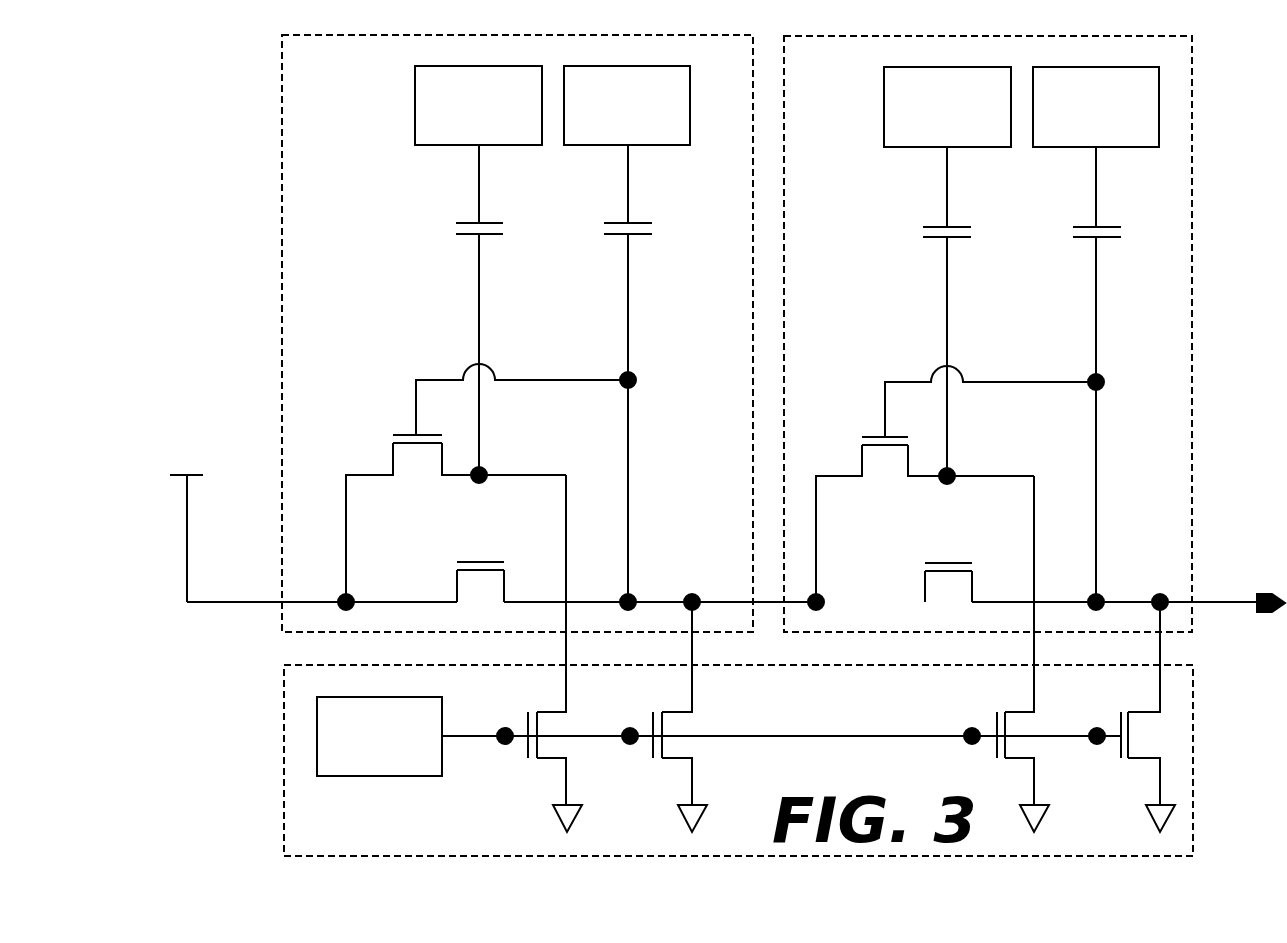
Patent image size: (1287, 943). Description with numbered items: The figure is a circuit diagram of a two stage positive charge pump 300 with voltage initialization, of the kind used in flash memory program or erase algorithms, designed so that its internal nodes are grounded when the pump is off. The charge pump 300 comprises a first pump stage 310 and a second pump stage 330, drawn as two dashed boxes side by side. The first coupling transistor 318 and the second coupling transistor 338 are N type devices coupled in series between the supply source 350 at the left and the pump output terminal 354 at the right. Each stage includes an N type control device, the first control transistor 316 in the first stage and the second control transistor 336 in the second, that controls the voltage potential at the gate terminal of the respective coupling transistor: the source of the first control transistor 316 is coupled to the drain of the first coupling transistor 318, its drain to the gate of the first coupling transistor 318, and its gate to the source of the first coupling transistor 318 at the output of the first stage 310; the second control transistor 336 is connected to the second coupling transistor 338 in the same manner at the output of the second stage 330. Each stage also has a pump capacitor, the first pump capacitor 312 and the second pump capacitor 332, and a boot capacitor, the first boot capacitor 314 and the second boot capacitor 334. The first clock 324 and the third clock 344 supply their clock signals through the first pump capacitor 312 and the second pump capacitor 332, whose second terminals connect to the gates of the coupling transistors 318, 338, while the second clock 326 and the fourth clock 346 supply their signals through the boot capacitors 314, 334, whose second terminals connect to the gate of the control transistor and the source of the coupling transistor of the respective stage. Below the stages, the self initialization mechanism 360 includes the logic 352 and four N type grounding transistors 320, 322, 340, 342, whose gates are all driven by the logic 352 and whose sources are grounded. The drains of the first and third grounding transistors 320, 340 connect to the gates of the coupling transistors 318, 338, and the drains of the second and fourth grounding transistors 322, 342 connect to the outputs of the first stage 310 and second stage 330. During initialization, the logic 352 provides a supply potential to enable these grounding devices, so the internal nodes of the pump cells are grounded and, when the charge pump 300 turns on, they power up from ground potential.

The two stage positive charge pump 300 is at (240, 342).
The first pump stage 310 is at (517, 333).
The pump capacitor C1 312 is at (463, 310).
The boot capacitor C2 314 is at (612, 373).
The N type device N1 316 is at (487, 483).
The coupling transistor N2 318 is at (483, 562).
The initialization transistor N3 320 is at (546, 653).
The initialization transistor N4 322 is at (671, 717).
The Clock 1 324 is at (478, 105).
The Clock 2 326 is at (627, 105).
The second pump stage 330 is at (988, 334).
The pump capacitor C3 332 is at (931, 311).
The boot capacitor C4 334 is at (1081, 374).
The N type device N5 336 is at (956, 484).
The coupling transistor N6 338 is at (951, 563).
The initialization transistor N7 340 is at (1015, 654).
The initialization transistor N8 342 is at (1140, 717).
The Clock 3 344 is at (947, 107).
The Clock 4 346 is at (1096, 107).
The supply source VCC 350 is at (253, 523).
The logic 352 is at (719, 736).
The pump output terminal VOUT 354 is at (1099, 596).
The self initialization mechanism 360 is at (738, 760).